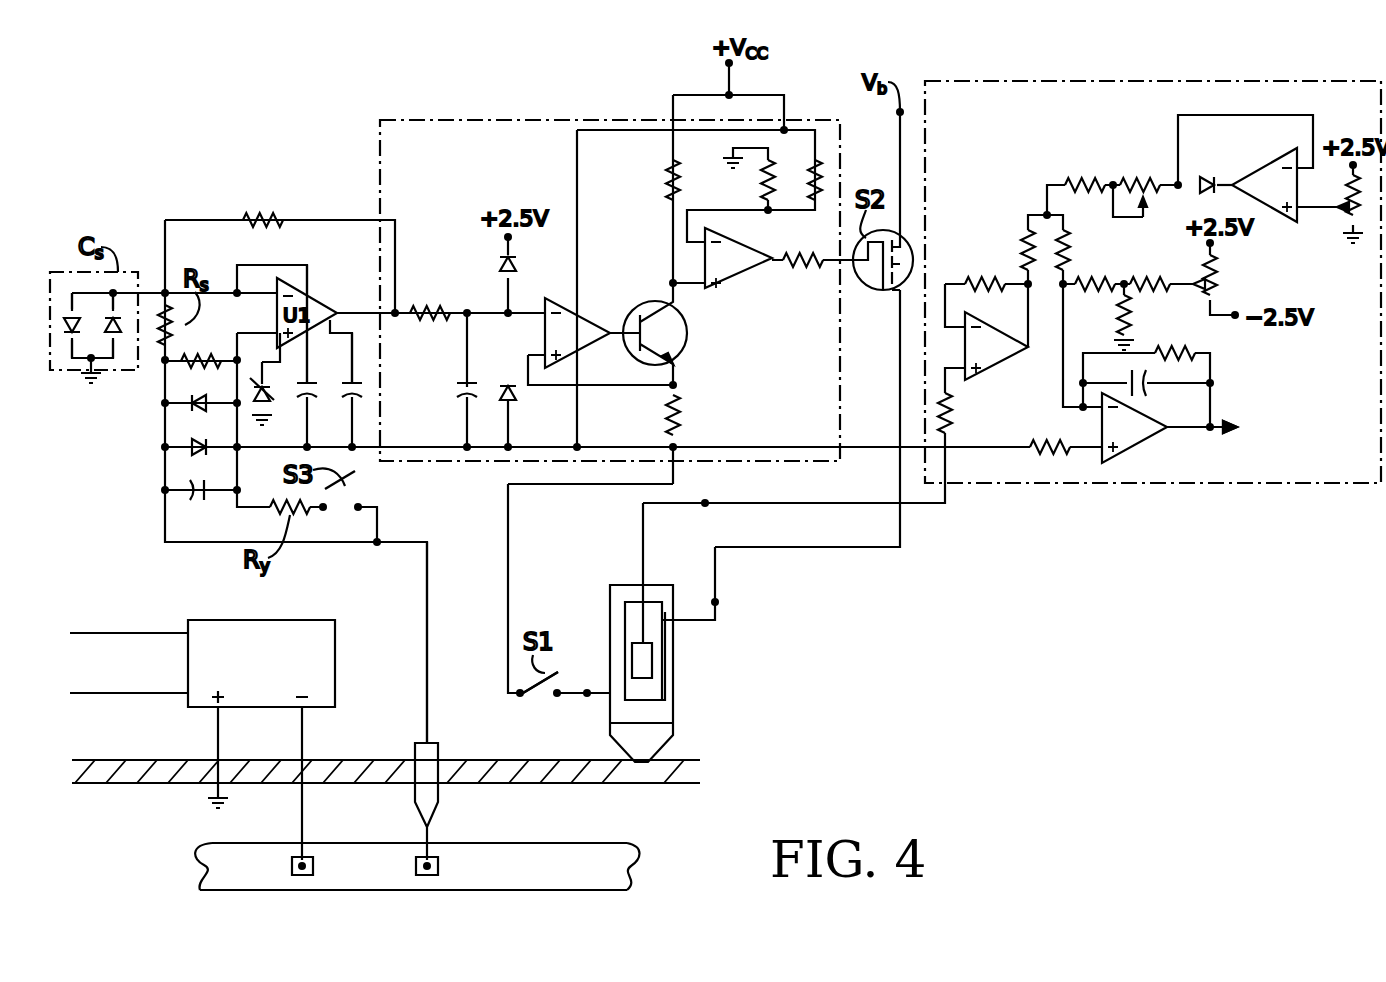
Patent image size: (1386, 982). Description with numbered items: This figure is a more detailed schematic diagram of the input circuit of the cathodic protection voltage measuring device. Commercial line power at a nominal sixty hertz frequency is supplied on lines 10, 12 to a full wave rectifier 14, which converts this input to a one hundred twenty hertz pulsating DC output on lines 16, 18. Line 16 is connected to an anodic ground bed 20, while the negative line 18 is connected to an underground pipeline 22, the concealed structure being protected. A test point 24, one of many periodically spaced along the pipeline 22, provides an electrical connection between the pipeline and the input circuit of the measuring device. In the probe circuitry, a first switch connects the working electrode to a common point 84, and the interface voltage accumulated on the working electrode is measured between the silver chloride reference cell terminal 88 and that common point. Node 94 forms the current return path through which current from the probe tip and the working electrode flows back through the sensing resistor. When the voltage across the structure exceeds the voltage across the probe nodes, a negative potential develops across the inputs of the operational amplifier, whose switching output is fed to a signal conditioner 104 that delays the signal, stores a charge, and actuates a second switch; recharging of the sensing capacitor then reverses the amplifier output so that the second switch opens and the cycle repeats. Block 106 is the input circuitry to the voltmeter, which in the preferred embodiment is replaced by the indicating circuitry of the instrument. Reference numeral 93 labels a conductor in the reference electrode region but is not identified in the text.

The power line 10 is at (130, 632).
The power line 12 is at (130, 694).
The full wave rectifier 14 is at (315, 620).
The output line 16 is at (218, 737).
The negative line 18 is at (305, 736).
The anodic ground bed 20 is at (210, 809).
The underground pipeline 22 is at (200, 897).
The test point 24 is at (438, 756).
The common point 84 is at (355, 450).
The silver chloride reference cell terminal 88 is at (705, 503).
The conductor to reference electrode 93 is at (715, 602).
The node 94 is at (587, 695).
The signal conditioner 104 is at (478, 120).
The block 106 is at (1080, 81).